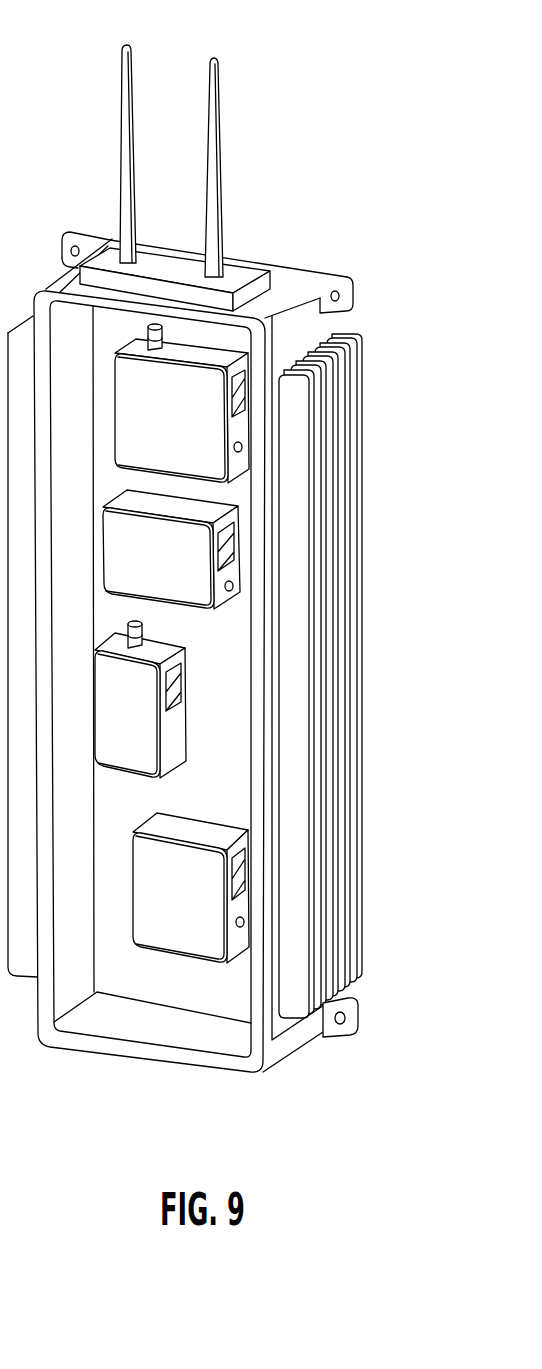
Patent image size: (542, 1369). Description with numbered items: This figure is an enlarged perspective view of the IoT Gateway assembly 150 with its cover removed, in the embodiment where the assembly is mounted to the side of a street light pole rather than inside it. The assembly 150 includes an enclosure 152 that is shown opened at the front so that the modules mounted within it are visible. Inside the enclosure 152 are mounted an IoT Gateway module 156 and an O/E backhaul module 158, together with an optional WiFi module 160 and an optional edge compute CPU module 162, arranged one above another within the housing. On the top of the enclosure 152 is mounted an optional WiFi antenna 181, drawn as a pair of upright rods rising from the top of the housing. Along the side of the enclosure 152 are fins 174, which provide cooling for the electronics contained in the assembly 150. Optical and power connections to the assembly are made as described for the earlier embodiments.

The IoT Gateway assembly 150 is at (183, 1102).
The enclosure 152 is at (237, 1077).
The IoT Gateway module 156 is at (198, 458).
The O/E backhaul module 158 is at (188, 883).
The WiFi module 160 is at (148, 732).
The edge compute CPU module 162 is at (187, 585).
The fins 174 is at (350, 622).
The WiFi antenna 181 is at (132, 67).